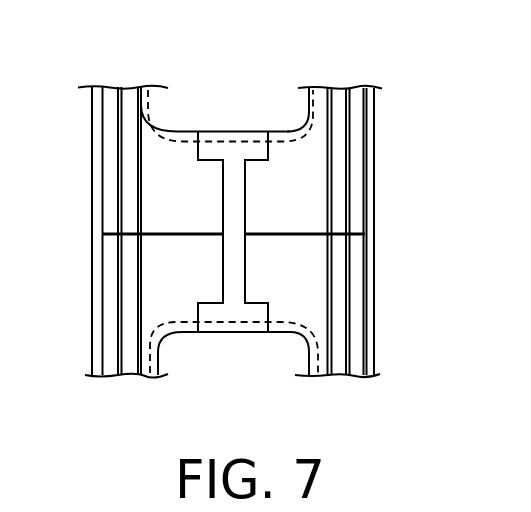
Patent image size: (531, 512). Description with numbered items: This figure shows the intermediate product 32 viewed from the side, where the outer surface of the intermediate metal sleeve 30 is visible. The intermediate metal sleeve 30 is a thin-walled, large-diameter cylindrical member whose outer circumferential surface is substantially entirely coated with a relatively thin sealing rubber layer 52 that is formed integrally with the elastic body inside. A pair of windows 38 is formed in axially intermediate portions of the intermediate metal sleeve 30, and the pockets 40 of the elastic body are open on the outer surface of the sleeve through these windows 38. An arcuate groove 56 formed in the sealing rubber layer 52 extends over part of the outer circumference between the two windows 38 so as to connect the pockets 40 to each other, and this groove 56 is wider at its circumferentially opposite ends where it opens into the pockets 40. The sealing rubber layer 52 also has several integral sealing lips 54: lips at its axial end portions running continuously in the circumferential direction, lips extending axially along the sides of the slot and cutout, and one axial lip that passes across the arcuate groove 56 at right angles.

The intermediate metal sleeve 30 is at (372, 343).
The intermediate product 32 is at (427, 117).
The windows 38 is at (305, 112).
The pockets 40 is at (157, 109).
The sealing rubber layer 52 is at (315, 190).
The sealing lips 54 is at (138, 132).
The arcuate groove 56 is at (243, 272).